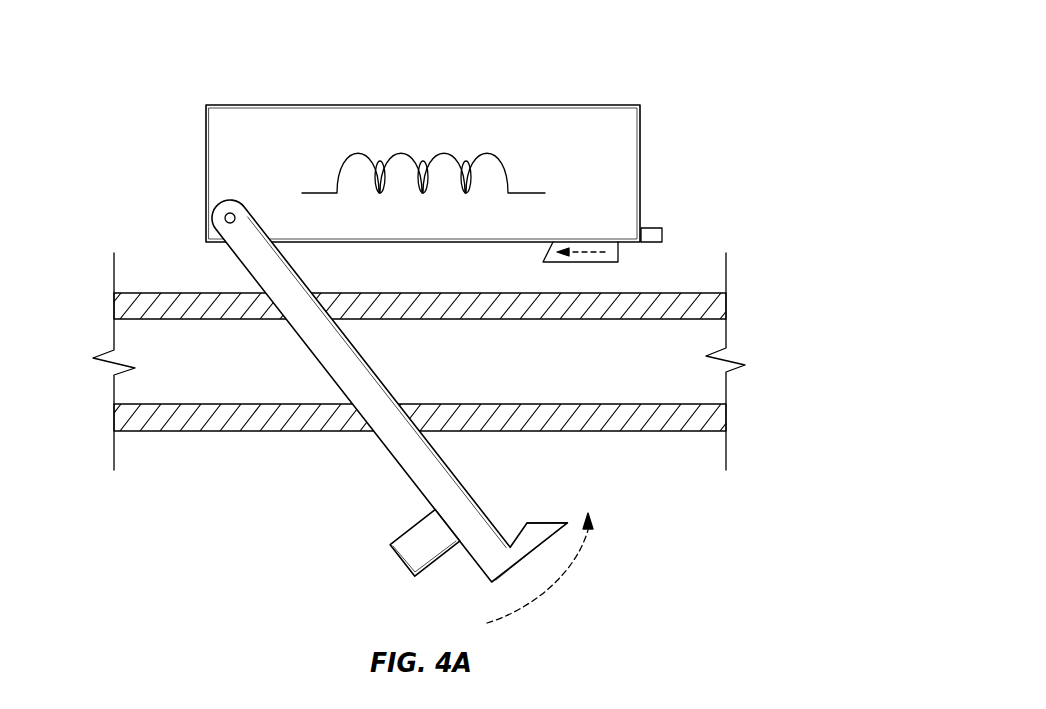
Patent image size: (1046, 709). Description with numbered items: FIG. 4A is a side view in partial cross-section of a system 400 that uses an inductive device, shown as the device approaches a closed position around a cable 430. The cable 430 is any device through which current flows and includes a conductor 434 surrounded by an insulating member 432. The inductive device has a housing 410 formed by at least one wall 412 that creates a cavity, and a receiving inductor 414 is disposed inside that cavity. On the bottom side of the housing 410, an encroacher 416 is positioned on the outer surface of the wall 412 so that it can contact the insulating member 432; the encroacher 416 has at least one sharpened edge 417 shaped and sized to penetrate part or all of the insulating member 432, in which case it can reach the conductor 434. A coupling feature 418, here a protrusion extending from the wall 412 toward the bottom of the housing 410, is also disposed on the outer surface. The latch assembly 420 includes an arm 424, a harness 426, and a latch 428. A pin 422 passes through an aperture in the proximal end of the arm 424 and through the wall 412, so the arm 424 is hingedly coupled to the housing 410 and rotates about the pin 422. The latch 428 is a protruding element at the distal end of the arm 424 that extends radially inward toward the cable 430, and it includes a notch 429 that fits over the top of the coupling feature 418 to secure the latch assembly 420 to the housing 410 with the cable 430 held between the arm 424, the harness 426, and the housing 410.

The system 400 is at (678, 43).
The housing 410 is at (226, 78).
The wall 412 is at (424, 104).
The receiving inductor 414 is at (361, 152).
The encroacher 416 is at (584, 240).
The sharpened edge 417 is at (545, 258).
The coupling feature 418 is at (652, 228).
The latch assembly 420 is at (372, 458).
The pin 422 is at (225, 215).
The arm 424 is at (424, 470).
The harness 426 is at (418, 528).
The latch 428 is at (543, 523).
The notch 429 is at (524, 523).
The cable 430 is at (127, 246).
The insulating member 432 is at (186, 303).
The conductor 434 is at (437, 374).